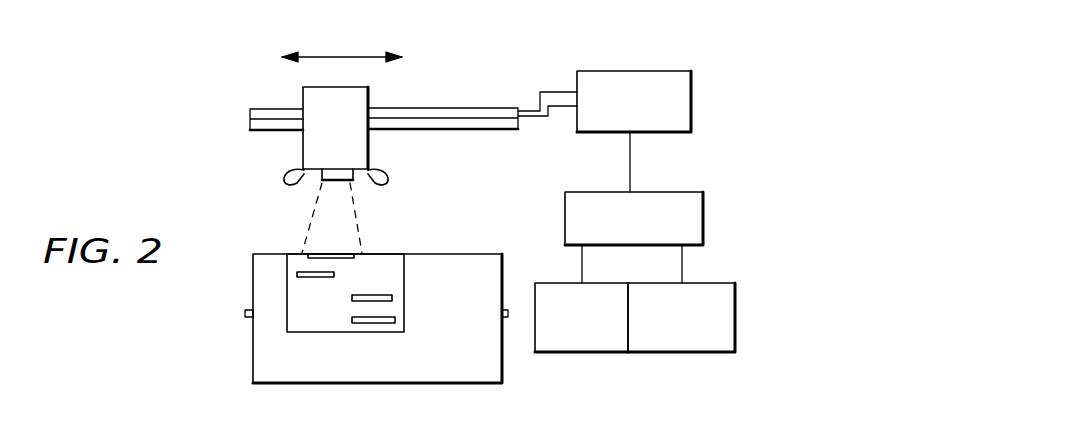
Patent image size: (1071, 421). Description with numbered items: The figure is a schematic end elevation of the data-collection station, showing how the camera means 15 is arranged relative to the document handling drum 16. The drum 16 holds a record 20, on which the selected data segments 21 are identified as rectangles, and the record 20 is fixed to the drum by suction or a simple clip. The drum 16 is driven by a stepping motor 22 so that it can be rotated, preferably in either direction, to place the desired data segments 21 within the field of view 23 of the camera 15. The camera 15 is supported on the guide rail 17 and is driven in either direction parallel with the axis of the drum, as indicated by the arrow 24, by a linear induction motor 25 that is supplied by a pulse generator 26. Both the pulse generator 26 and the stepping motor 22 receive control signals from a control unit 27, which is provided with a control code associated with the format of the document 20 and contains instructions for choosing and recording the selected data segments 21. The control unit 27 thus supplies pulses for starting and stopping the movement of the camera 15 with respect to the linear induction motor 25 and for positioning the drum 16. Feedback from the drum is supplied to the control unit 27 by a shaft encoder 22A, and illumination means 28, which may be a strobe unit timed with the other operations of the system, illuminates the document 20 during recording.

The camera means 15 is at (303, 88).
The document handling drum 16 is at (253, 277).
The support rail 17 is at (250, 126).
The record 20 is at (287, 320).
The data segments 21 is at (334, 274).
The stepping motor 22 is at (592, 352).
The shaft encoder 22A is at (735, 308).
The field of view 23 is at (355, 217).
The arrow 24 is at (337, 56).
The linear induction motor 25 is at (418, 108).
The pulse generator 26 is at (692, 95).
The control unit 27 is at (703, 208).
The illumination means 28 is at (284, 174).